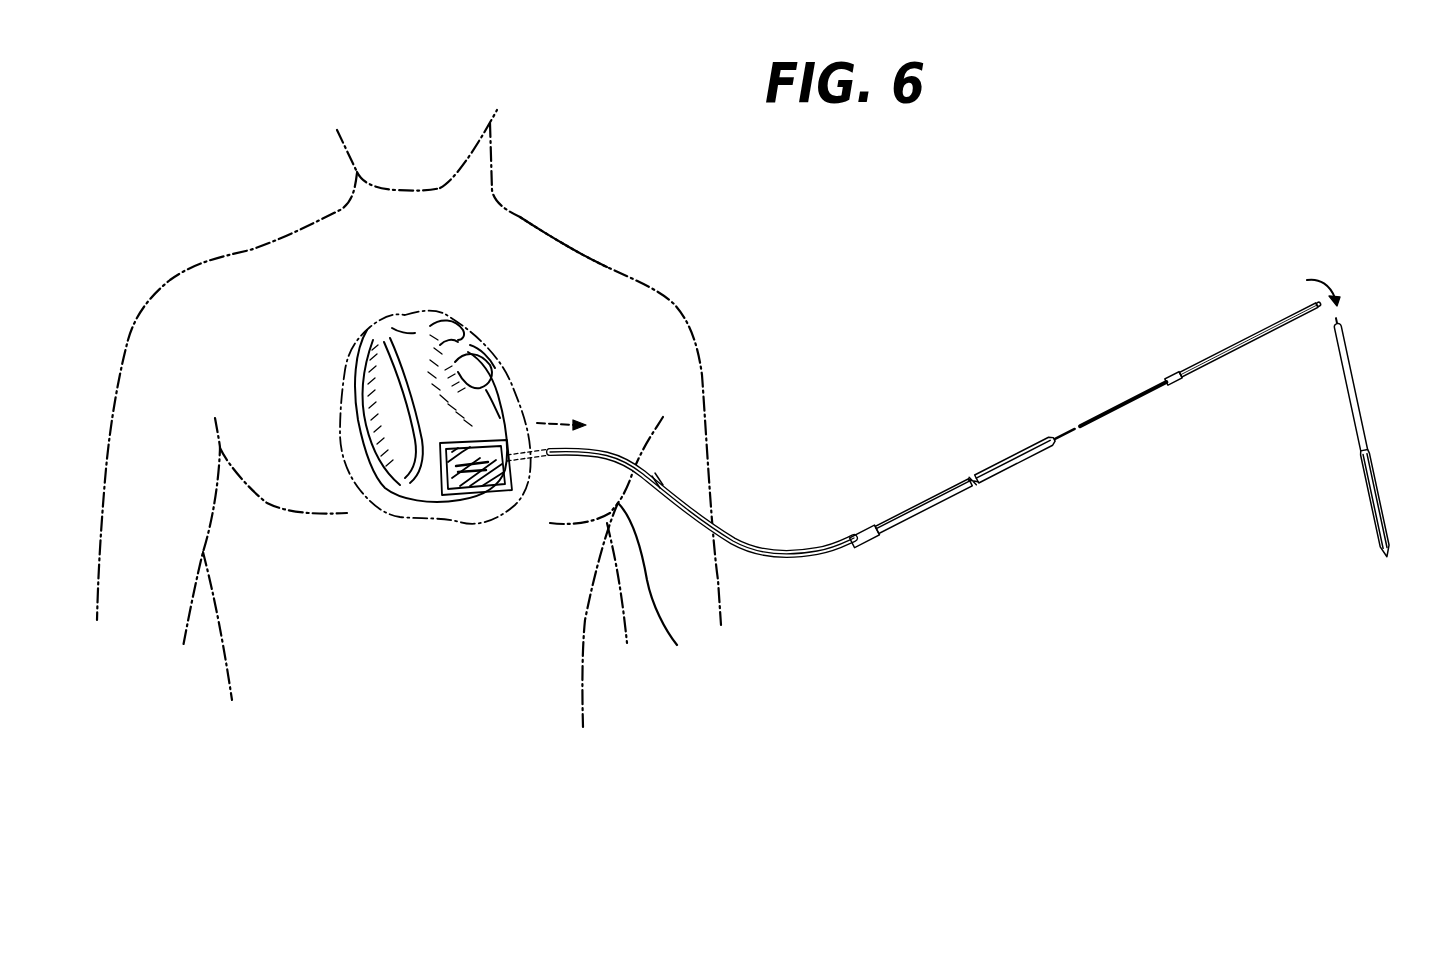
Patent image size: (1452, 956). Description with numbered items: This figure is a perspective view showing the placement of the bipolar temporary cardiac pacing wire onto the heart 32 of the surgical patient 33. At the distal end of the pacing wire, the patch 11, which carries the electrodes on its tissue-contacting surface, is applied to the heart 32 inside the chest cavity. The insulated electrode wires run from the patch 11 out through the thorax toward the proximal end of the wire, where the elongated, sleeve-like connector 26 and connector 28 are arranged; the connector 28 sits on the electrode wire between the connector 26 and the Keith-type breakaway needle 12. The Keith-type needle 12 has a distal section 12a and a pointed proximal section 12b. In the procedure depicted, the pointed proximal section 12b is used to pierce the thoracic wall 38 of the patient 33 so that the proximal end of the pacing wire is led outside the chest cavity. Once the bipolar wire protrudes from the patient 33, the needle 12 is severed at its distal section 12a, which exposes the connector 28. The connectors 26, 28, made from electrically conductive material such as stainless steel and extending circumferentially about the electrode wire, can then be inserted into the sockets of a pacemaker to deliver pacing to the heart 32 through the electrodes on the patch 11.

The patch 11 is at (452, 486).
The Keith-type breakaway needle 12 is at (1363, 413).
The distal section 12a is at (1227, 347).
The proximal section 12b is at (1381, 547).
The connector 26 is at (900, 510).
The connector 28 is at (1017, 453).
The heart 32 is at (385, 430).
The surgical patient 33 is at (553, 257).
The thoracic wall 38 is at (665, 587).